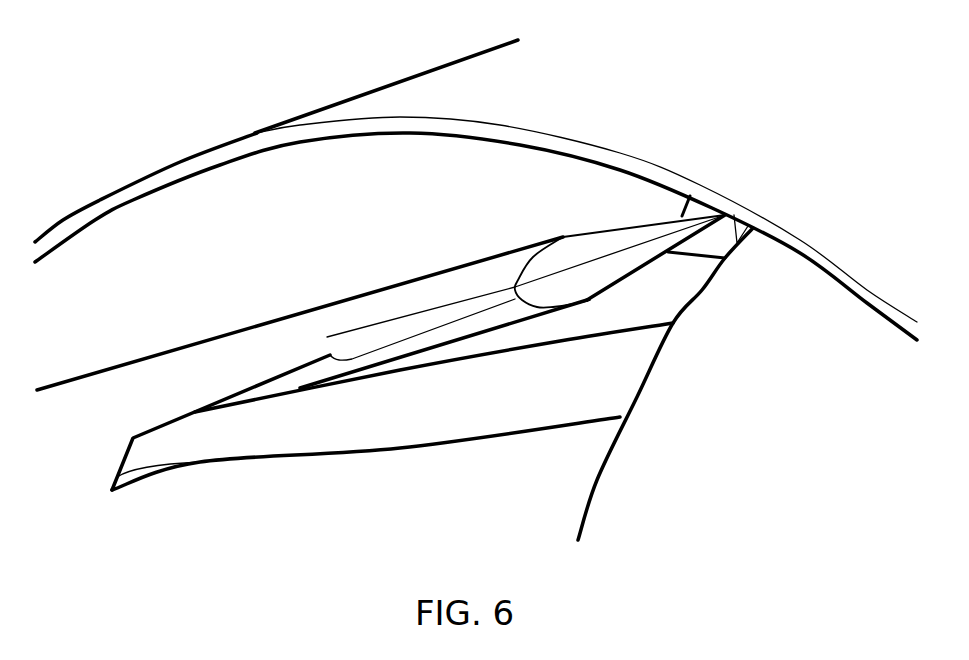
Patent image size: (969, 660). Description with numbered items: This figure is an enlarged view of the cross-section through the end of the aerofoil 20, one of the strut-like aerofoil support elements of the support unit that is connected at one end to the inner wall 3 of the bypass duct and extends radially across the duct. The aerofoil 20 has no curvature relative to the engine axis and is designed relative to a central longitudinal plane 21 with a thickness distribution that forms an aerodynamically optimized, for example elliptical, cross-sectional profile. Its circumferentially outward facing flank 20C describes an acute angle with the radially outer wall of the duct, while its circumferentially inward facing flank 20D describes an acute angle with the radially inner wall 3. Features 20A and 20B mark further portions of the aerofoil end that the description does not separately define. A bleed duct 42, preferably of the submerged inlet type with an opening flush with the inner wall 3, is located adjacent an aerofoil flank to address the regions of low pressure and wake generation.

The inner wall 3 is at (457, 88).
The aerofoil 20 is at (372, 308).
The fin base / rounded end 20A is at (513, 301).
The fin tip 20B is at (733, 214).
The circumferentially outward facing flank 20C is at (617, 290).
The circumferentially inward facing flank 20D is at (575, 236).
The central longitudinal plane 21 is at (625, 237).
The bleed duct 42 is at (615, 394).